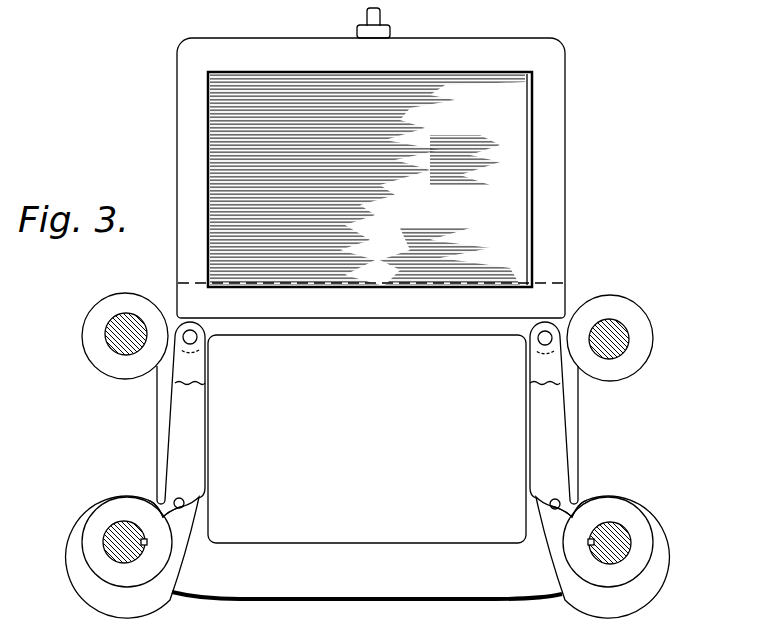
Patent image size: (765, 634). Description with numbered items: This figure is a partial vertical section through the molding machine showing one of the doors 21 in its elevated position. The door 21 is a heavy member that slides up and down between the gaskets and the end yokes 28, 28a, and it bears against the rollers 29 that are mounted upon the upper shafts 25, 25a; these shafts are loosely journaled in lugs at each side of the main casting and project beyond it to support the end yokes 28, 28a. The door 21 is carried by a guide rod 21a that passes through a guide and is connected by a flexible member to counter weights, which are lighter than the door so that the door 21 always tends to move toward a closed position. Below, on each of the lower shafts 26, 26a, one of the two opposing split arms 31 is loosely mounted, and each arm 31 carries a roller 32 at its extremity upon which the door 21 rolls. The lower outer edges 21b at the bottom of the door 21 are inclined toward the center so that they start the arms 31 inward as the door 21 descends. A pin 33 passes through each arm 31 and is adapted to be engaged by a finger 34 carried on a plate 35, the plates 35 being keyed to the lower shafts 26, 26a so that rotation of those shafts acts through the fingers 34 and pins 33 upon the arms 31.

The door 21 is at (558, 167).
The guide rod 21a is at (383, 23).
The lower outer edge 21b is at (602, 277).
The upper shaft 25 is at (105, 332).
The upper shaft 25a is at (630, 335).
The lower shaft 26 is at (112, 527).
The lower shaft 26a is at (623, 535).
The end yoke 28 is at (384, 589).
The end yoke 28a is at (367, 484).
The roller 29 is at (102, 307).
The split arm 31 is at (198, 423).
The roller 32 is at (208, 342).
The pin 33 is at (183, 499).
The finger 34 is at (188, 515).
The plate 35 is at (97, 578).